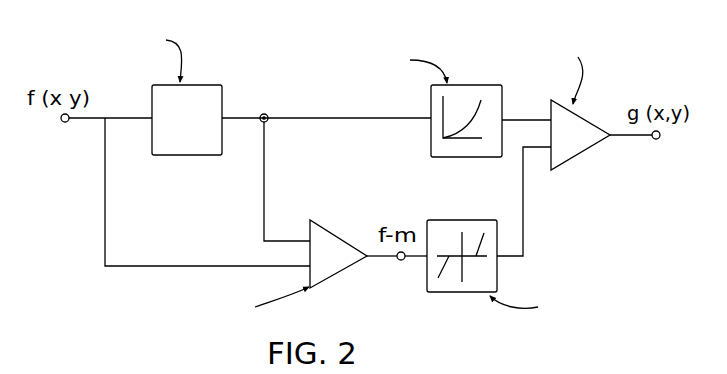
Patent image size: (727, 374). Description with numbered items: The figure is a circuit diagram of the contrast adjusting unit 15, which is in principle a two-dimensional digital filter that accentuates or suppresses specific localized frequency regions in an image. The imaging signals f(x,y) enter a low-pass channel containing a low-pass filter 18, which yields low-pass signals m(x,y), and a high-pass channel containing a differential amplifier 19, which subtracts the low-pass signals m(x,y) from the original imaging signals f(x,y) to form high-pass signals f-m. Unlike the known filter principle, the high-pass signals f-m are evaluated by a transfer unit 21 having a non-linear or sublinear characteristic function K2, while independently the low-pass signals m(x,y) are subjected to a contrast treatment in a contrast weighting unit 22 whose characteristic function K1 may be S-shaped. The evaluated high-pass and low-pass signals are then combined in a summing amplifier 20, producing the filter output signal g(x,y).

The contrast adjusting unit 15 is at (342, 106).
The low-pass filter 18 is at (188, 145).
The differential amplifier 19 is at (326, 242).
The summing amplifier 20 is at (580, 140).
The transfer unit 21 is at (442, 221).
The contrast weighting unit 22 is at (468, 148).